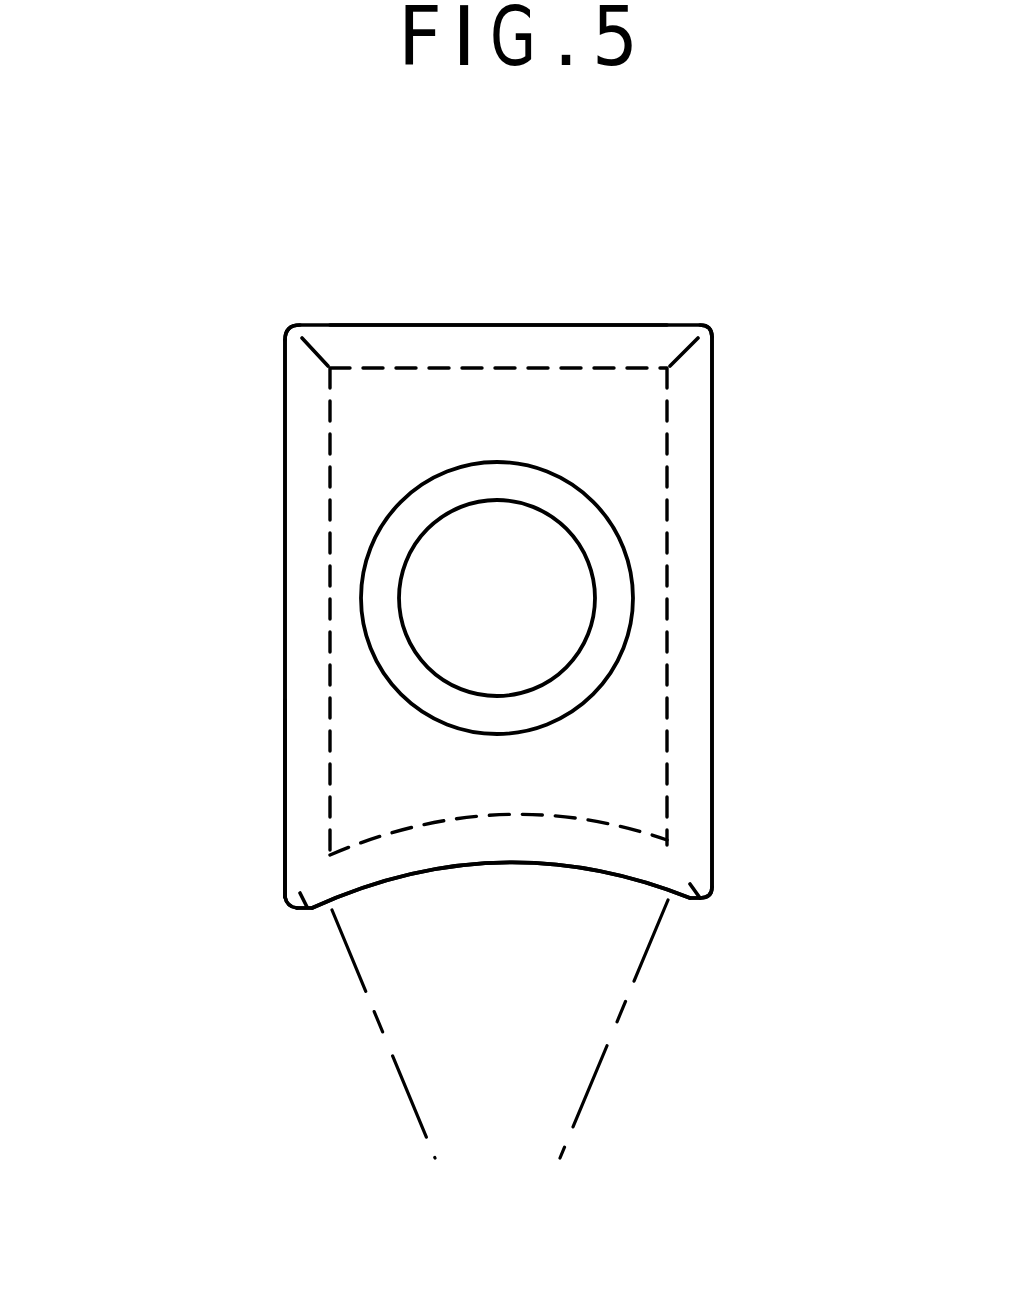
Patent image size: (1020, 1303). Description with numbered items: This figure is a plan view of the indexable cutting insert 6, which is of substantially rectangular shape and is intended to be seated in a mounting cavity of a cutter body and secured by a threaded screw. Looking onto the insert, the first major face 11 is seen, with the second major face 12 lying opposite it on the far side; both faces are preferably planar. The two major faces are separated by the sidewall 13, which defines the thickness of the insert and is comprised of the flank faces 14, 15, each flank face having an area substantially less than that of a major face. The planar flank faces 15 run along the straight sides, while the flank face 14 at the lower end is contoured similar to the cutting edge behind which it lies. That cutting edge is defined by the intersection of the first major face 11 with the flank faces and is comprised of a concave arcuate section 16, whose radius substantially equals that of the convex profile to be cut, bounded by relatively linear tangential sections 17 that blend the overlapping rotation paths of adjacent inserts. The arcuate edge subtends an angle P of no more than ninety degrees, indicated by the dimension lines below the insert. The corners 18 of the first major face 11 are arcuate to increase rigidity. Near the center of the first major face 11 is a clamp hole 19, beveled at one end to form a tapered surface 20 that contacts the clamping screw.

The indexable cutting insert 6 is at (285, 468).
The first major face 11 is at (380, 400).
The second major face 12 is at (345, 793).
The sidewall 13 is at (625, 350).
The flank face 14 is at (567, 848).
The flank face 15 is at (475, 350).
The concave arcuate section 16 is at (472, 865).
The tangential section 17 is at (320, 910).
The corner 18 is at (290, 333).
The clamp hole 19 is at (638, 580).
The tapered surface 20 is at (610, 643).
The angle of concave arcuate cutting edge P is at (584, 1100).